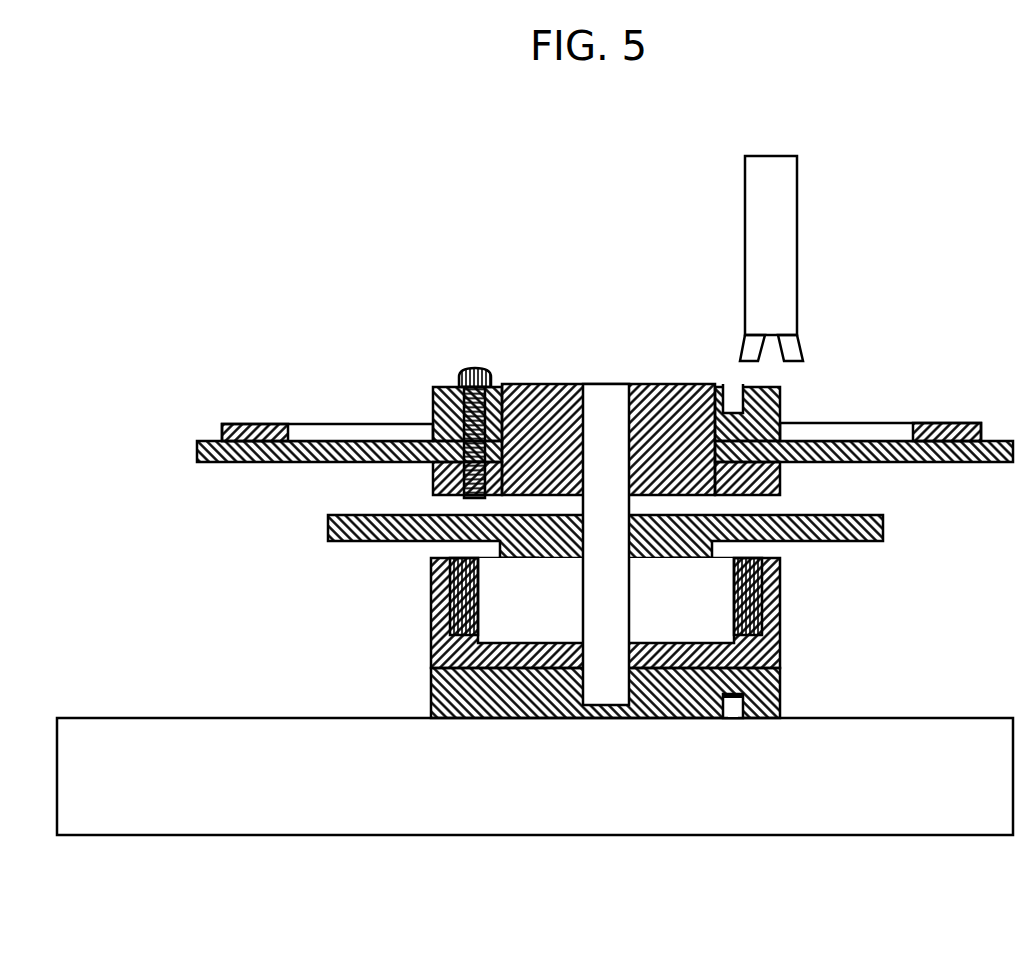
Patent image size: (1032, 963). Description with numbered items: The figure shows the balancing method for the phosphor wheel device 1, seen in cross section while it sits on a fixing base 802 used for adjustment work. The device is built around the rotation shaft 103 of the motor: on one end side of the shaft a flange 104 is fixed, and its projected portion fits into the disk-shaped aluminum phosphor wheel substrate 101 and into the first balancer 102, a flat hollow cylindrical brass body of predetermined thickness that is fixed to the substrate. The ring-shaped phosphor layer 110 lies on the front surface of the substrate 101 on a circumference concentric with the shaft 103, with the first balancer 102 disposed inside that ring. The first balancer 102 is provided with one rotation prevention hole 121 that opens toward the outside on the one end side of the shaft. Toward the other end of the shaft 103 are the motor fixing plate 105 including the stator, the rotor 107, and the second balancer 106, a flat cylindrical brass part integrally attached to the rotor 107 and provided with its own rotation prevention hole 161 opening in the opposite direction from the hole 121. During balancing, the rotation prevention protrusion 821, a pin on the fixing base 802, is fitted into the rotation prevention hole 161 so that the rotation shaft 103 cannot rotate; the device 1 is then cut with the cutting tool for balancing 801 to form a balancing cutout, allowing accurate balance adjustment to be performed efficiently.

The phosphor wheel device 1 is at (406, 232).
The phosphor wheel substrate 101 is at (212, 450).
The first balancer 102 is at (447, 402).
The rotation shaft 103 is at (462, 369).
The flange 104 is at (536, 397).
The motor fixing plate 105 is at (350, 530).
The second balancer 106 is at (445, 693).
The rotor 107 is at (445, 654).
The phosphor layer 110 is at (227, 425).
The rotation prevention hole 121 is at (733, 400).
The rotation prevention hole 161 is at (759, 703).
The cutting tool for balancing 801 is at (780, 232).
The fixing base 802 is at (587, 805).
The rotation prevention protrusion 821 is at (735, 708).